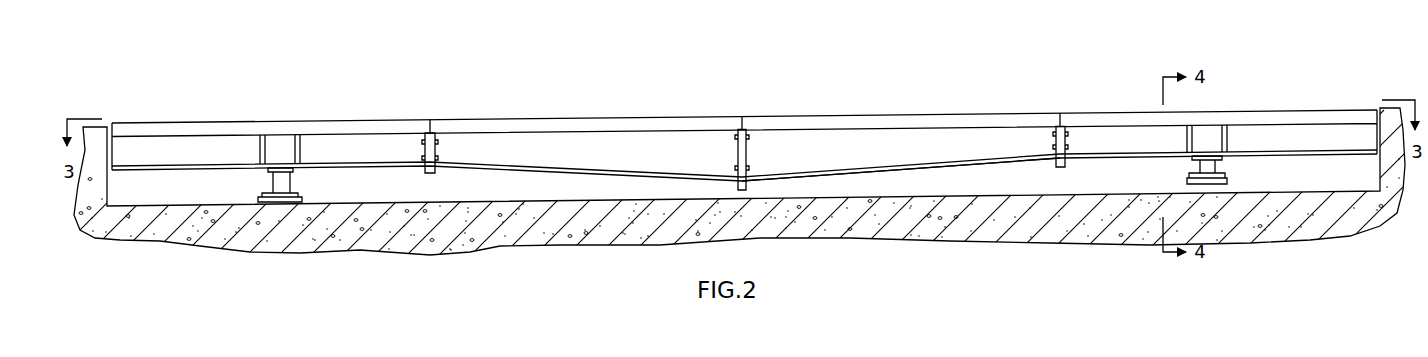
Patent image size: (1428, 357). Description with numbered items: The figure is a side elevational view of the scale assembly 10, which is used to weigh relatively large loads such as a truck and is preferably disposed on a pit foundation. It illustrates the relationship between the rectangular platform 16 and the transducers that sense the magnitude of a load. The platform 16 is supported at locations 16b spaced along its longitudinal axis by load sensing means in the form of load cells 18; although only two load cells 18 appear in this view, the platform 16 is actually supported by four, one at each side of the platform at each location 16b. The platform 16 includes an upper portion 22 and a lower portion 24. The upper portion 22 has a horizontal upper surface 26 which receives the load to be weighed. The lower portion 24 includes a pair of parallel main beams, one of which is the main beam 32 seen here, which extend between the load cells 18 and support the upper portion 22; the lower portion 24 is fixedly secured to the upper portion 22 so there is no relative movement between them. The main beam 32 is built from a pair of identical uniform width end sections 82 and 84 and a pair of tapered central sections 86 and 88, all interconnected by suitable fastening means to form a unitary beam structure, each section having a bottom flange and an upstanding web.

The scale assembly 10 is at (928, 72).
The rectangular platform 16 is at (688, 108).
The support locations 16b is at (281, 114).
The load cells 18 is at (272, 181).
The upper portion 22 is at (543, 112).
The lower portion 24 is at (552, 180).
The horizontal upper surface 26 is at (992, 111).
The main beam 32 is at (892, 170).
The end section 82 is at (362, 148).
The end section 84 is at (1297, 147).
The tapered central section 86 is at (622, 147).
The tapered central section 88 is at (828, 148).